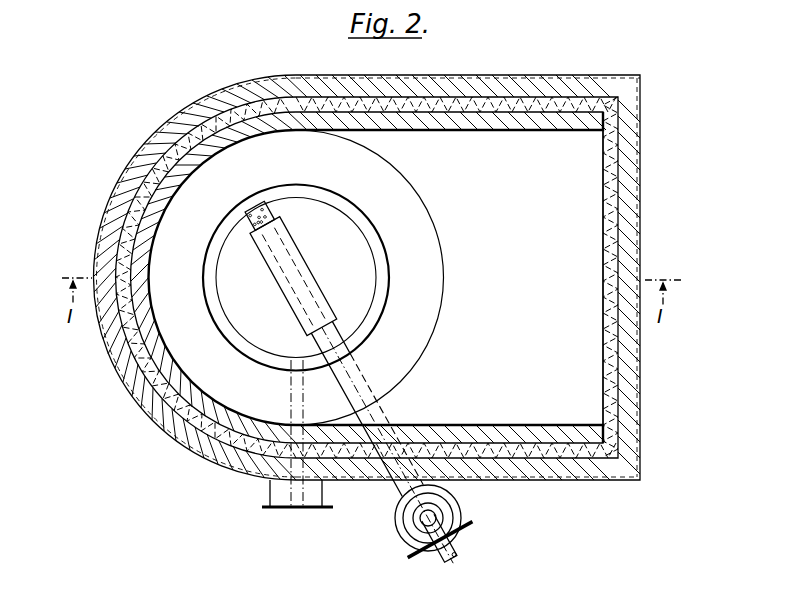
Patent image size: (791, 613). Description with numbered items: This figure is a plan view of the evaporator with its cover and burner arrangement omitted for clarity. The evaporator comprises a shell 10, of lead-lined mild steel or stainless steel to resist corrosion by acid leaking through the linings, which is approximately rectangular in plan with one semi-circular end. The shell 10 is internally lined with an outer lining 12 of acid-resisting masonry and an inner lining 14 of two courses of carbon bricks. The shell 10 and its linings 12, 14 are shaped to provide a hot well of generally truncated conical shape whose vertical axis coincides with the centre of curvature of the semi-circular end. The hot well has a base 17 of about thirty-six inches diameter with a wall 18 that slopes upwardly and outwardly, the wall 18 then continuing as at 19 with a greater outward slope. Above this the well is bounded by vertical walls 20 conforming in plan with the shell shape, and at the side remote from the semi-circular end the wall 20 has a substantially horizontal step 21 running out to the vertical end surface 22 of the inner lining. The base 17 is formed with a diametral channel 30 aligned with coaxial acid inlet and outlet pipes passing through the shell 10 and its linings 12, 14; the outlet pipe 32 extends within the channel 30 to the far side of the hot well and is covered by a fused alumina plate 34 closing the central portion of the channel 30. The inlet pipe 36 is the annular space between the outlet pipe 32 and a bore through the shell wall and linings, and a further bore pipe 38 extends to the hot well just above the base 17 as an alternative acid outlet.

The shell 10 is at (100, 225).
The outer lining 12 is at (128, 192).
The inner lining 14 is at (187, 162).
The base 17 is at (233, 309).
The wall 18 is at (201, 292).
The wall continuation 19 is at (157, 268).
The vertical walls 20 is at (160, 343).
The horizontal step 21 is at (528, 281).
The vertical end surface 22 is at (606, 266).
The diametral channel 30 is at (272, 213).
The outlet pipe 32 is at (445, 560).
The fused alumina plate 34 is at (299, 253).
The inlet pipe 36 is at (457, 532).
The bore pipe 38 is at (302, 506).